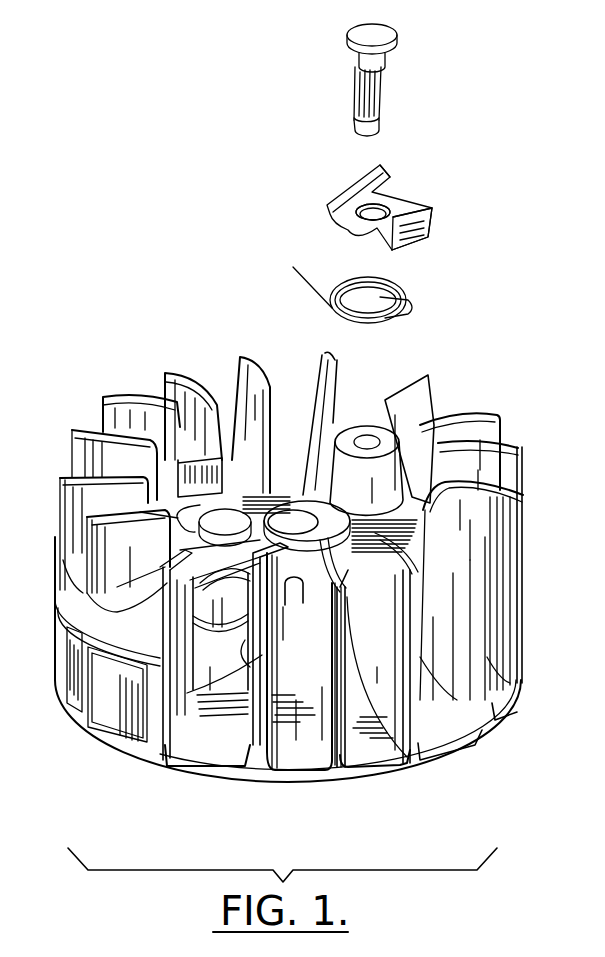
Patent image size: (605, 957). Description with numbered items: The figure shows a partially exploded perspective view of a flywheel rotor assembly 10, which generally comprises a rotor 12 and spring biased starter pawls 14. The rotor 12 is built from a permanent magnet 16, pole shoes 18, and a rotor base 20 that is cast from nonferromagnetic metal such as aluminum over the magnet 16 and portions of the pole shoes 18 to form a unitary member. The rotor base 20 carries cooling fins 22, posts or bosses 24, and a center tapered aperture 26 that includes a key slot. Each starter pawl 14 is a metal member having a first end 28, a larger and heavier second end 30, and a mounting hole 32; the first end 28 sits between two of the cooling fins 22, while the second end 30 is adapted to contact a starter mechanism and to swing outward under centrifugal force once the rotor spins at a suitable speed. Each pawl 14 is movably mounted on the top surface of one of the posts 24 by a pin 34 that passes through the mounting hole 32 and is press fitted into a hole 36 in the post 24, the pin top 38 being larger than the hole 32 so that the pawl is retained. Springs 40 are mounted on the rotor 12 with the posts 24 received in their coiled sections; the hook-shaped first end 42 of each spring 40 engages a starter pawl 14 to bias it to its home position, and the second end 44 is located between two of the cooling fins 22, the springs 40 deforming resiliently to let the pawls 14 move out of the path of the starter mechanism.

The flywheel rotor assembly 10 is at (165, 287).
The rotor 12 is at (525, 607).
The starter pawls 14 is at (400, 200).
The permanent magnet 16 is at (55, 630).
The pole shoes 18 is at (112, 710).
The rotor base 20 is at (407, 760).
The cooling fins 22 is at (503, 510).
The posts 24 is at (221, 682).
The center tapered aperture 26 is at (288, 520).
The first end 28 is at (383, 173).
The second end 30 is at (423, 223).
The mounting hole 32 is at (353, 217).
The pins 34 is at (354, 90).
The holes 36 is at (367, 437).
The tops 38 is at (383, 36).
The springs 40 is at (397, 287).
The first end 42 is at (72, 448).
The second end 44 is at (305, 600).